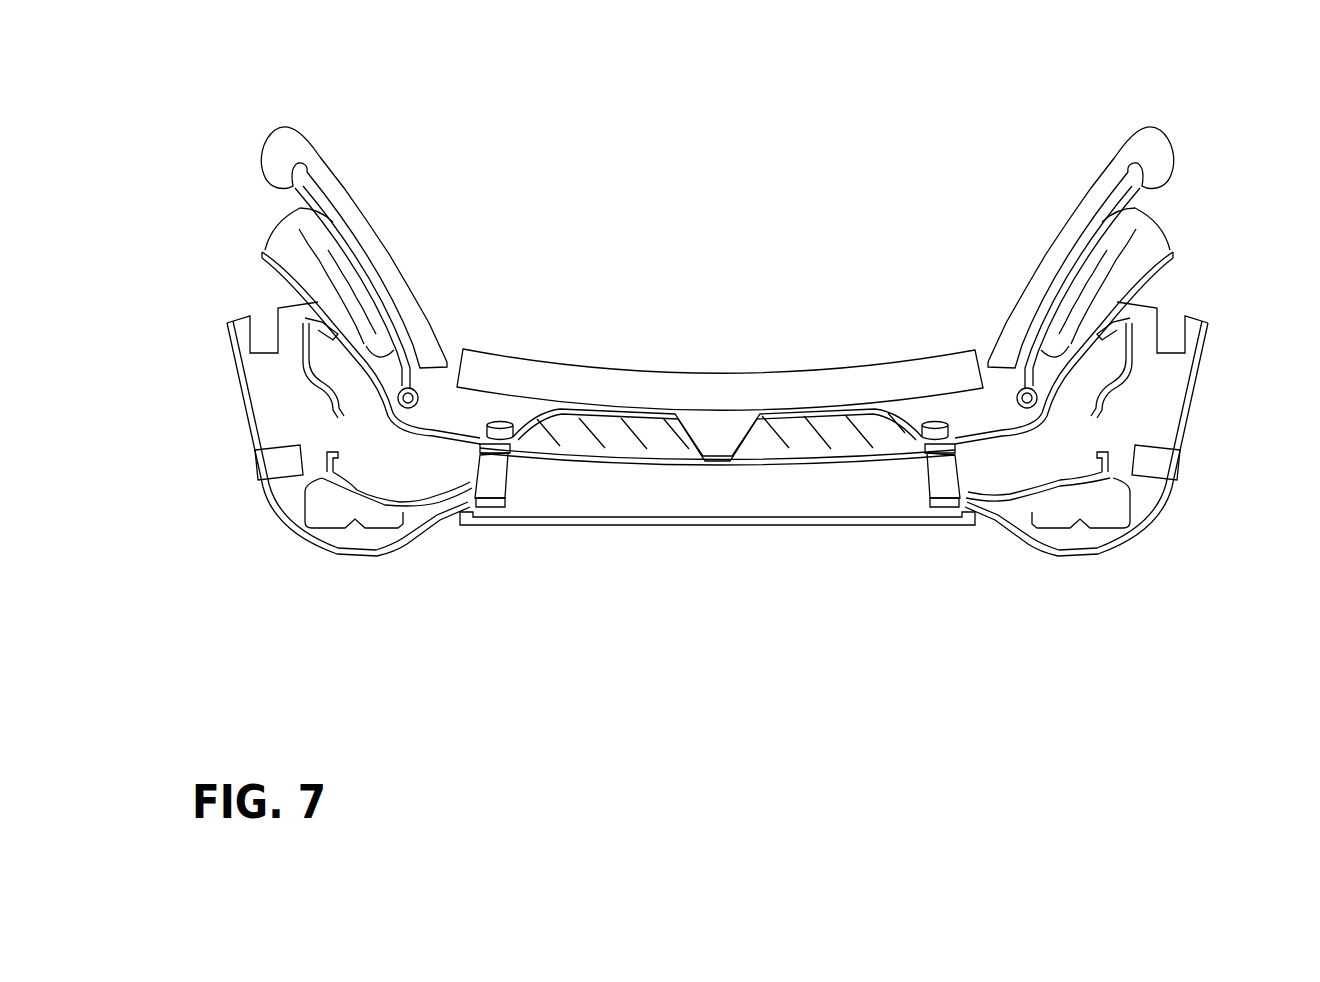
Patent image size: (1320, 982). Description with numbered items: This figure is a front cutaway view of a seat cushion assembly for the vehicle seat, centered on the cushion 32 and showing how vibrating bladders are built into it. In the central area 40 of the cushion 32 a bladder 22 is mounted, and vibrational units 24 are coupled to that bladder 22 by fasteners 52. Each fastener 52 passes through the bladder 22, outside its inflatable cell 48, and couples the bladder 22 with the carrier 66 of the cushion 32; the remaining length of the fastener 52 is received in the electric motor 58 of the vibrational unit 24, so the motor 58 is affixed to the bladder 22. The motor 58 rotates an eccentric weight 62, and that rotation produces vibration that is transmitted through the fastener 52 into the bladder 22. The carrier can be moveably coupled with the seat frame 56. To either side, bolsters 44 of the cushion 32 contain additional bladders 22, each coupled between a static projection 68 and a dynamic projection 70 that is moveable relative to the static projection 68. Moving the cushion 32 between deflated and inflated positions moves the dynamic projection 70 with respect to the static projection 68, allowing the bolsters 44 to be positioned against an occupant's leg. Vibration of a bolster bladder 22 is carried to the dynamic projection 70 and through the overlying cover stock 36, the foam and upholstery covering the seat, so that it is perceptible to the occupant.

The bladder 22 is at (722, 468).
The vibrational unit 24 is at (512, 482).
The cushion 32 is at (1207, 437).
The cover stock 36 is at (367, 233).
The central area 40 is at (715, 358).
The bolster 44 is at (255, 213).
The cell 48 is at (786, 436).
The fastener 52 is at (508, 421).
The seat frame 56 is at (350, 560).
The electric motor 58 is at (467, 520).
The eccentric weight 62 is at (505, 507).
The carrier 66 is at (662, 420).
The static projection 68 is at (258, 268).
The dynamic projection 70 is at (322, 198).